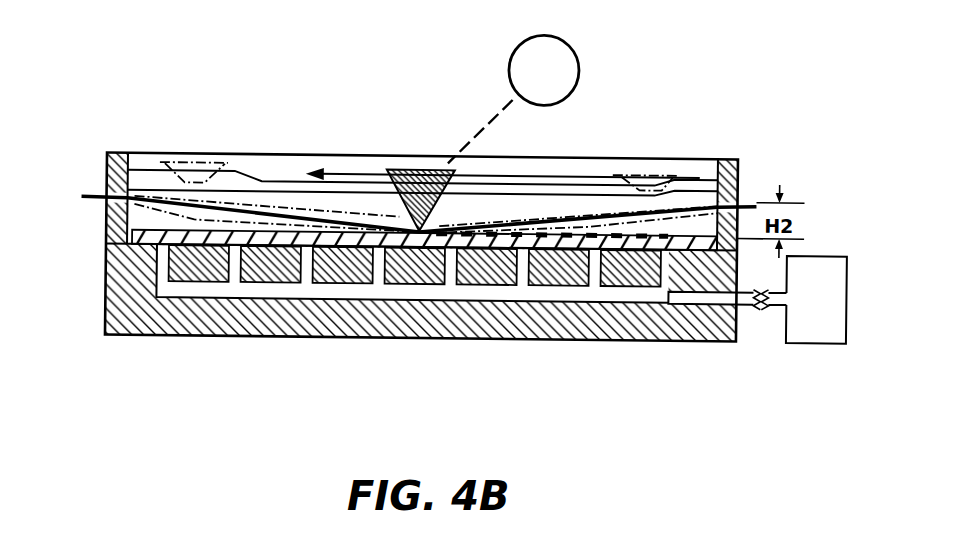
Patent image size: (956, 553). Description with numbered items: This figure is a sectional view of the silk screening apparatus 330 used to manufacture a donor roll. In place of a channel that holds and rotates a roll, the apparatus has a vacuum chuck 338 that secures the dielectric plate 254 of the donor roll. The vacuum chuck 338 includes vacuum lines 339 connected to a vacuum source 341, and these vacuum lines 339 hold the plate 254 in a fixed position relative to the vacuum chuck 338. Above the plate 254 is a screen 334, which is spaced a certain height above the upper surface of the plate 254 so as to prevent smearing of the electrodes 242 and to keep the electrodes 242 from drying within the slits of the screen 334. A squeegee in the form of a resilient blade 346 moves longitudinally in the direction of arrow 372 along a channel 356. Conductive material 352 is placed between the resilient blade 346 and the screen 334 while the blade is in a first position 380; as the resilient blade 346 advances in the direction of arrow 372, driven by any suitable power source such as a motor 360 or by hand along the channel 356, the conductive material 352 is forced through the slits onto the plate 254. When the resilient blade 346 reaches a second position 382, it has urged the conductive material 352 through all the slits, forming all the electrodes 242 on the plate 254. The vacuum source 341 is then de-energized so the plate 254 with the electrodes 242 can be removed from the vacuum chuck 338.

The silk screening apparatus 330 is at (136, 82).
The screen 334 is at (522, 216).
The vacuum chuck 338 is at (190, 343).
The vacuum lines 339 is at (340, 294).
The vacuum source 341 is at (840, 330).
The electrodes 242 is at (452, 238).
The plate 254 is at (392, 244).
The resilient blade 346 is at (415, 167).
The conductive material 352 is at (379, 212).
The channel 356 is at (570, 186).
The motor 360 is at (567, 37).
The arrow 372 is at (331, 173).
The first position 380 is at (645, 212).
The second position 382 is at (201, 225).